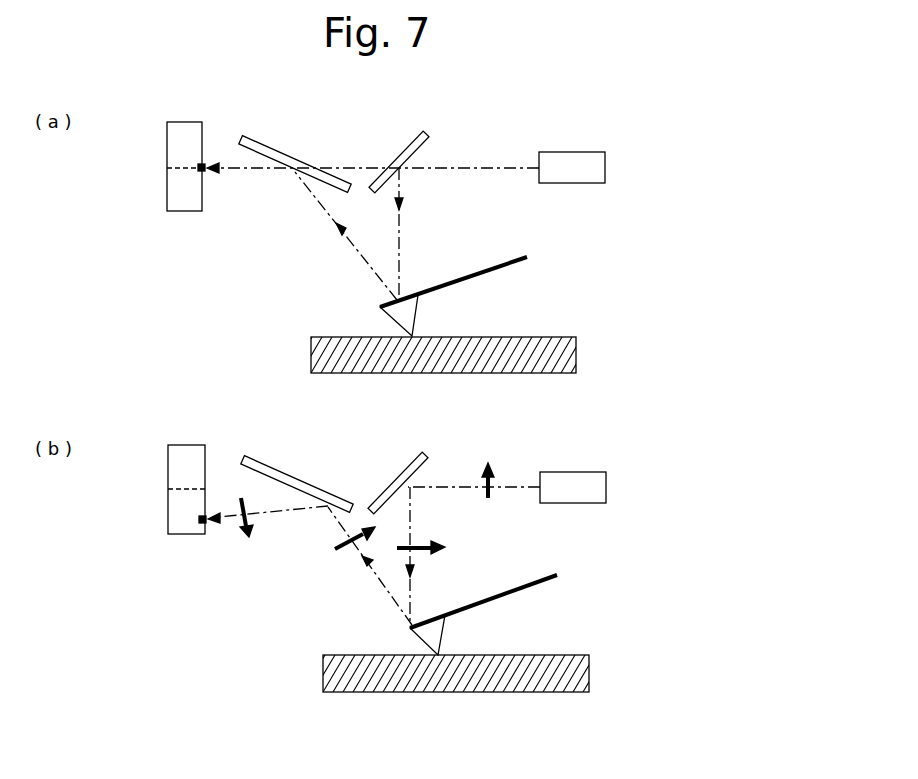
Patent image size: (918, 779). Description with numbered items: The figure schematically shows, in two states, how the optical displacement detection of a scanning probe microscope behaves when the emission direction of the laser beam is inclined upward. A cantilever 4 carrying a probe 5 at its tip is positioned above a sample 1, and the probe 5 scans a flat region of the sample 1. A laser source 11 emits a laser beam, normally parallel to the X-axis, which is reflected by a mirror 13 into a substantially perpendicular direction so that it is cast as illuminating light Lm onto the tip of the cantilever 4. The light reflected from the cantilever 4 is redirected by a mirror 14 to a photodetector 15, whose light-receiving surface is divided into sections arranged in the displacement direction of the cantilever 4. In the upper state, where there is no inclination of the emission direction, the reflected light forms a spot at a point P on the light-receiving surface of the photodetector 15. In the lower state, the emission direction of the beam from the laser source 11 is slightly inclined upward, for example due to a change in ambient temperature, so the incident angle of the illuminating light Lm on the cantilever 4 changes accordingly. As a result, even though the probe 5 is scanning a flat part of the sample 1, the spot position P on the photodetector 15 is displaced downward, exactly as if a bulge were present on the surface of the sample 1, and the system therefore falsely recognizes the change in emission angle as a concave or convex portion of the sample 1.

The sample 1 is at (549, 337).
The cantilever 4 is at (481, 271).
The probe 5 is at (397, 319).
The laser source 11 is at (605, 162).
The mirror 13 is at (406, 142).
The mirror 14 is at (275, 146).
The photodetector 15 is at (167, 137).
The spot position P is at (204, 171).
The illuminating light Lm is at (402, 231).